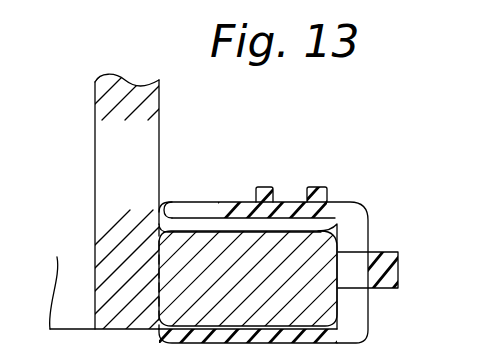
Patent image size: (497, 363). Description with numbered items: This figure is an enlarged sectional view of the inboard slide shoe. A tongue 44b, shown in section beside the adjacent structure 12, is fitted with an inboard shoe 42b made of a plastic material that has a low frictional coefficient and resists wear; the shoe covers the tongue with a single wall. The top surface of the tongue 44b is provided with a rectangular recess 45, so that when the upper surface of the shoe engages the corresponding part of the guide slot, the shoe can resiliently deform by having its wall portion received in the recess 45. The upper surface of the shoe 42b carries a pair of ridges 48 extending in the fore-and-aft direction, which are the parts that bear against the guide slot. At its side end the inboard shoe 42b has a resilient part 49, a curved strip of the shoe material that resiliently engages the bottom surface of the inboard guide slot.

The wall 12 is at (157, 126).
The inboard shoe 42b is at (360, 242).
The tongue 44b is at (330, 305).
The rectangular recess 45 is at (340, 224).
The ridges 48 is at (320, 187).
The resilient part 49 is at (397, 270).